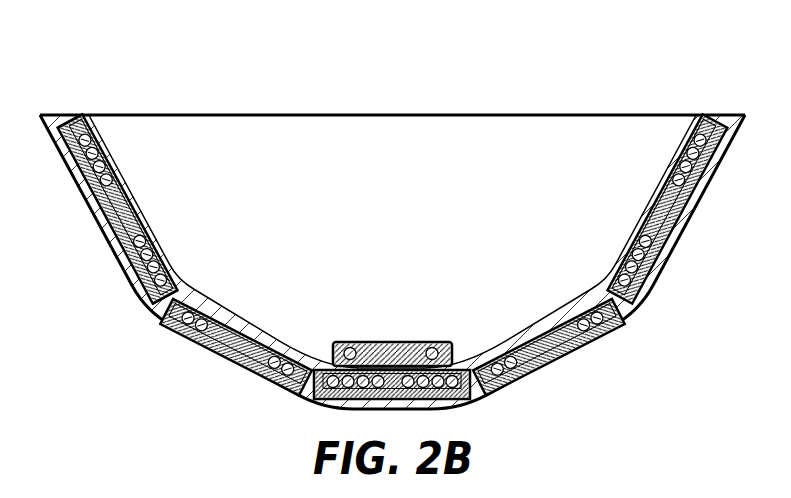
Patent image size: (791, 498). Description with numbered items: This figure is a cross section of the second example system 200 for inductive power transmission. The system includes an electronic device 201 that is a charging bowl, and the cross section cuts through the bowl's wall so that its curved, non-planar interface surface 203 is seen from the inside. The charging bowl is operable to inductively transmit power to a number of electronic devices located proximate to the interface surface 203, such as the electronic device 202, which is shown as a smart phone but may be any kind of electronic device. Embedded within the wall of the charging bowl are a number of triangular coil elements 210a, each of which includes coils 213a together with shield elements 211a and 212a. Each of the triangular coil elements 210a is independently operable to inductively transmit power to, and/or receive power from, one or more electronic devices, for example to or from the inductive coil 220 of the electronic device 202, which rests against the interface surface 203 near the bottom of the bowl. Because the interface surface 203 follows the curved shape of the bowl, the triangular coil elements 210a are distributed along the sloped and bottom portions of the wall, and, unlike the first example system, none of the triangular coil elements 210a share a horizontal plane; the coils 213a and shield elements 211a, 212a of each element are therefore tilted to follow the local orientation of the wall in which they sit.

The second example system 200 is at (387, 211).
The electronic device 201 is at (658, 284).
The electronic device 202 is at (383, 341).
The interface surface 203 is at (690, 120).
The triangular coil elements 210a is at (145, 195).
The shield elements 211a is at (84, 114).
The shield elements 212a is at (102, 225).
The coils 213a is at (99, 138).
The inductive coil 220 is at (355, 341).